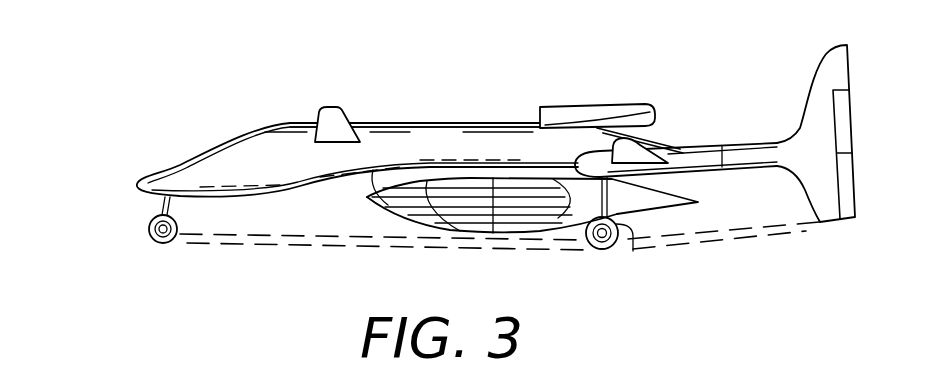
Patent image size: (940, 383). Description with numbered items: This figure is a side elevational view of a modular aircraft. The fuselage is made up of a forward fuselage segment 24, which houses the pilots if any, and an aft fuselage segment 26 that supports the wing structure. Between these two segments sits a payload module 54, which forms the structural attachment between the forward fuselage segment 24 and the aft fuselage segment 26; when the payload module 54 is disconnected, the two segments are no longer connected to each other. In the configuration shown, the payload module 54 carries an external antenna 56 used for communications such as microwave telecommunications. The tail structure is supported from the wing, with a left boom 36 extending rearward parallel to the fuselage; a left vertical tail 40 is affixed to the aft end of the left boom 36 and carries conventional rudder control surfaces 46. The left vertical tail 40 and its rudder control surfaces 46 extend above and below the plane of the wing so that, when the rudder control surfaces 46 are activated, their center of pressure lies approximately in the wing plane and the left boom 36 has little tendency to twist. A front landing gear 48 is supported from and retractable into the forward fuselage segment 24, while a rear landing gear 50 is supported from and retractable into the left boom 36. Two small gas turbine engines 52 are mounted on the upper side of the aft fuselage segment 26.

The forward fuselage segment 24 is at (221, 147).
The aft fuselage segment 26 is at (518, 123).
The left boom 36 is at (713, 170).
The left vertical tail 40 is at (812, 79).
The rudder control surfaces 46 is at (845, 125).
The front landing gear 48 is at (152, 227).
The rear landing gear 50 is at (627, 238).
The engines 52 is at (601, 106).
The payload module 54 is at (394, 123).
The external antenna 56 is at (405, 215).